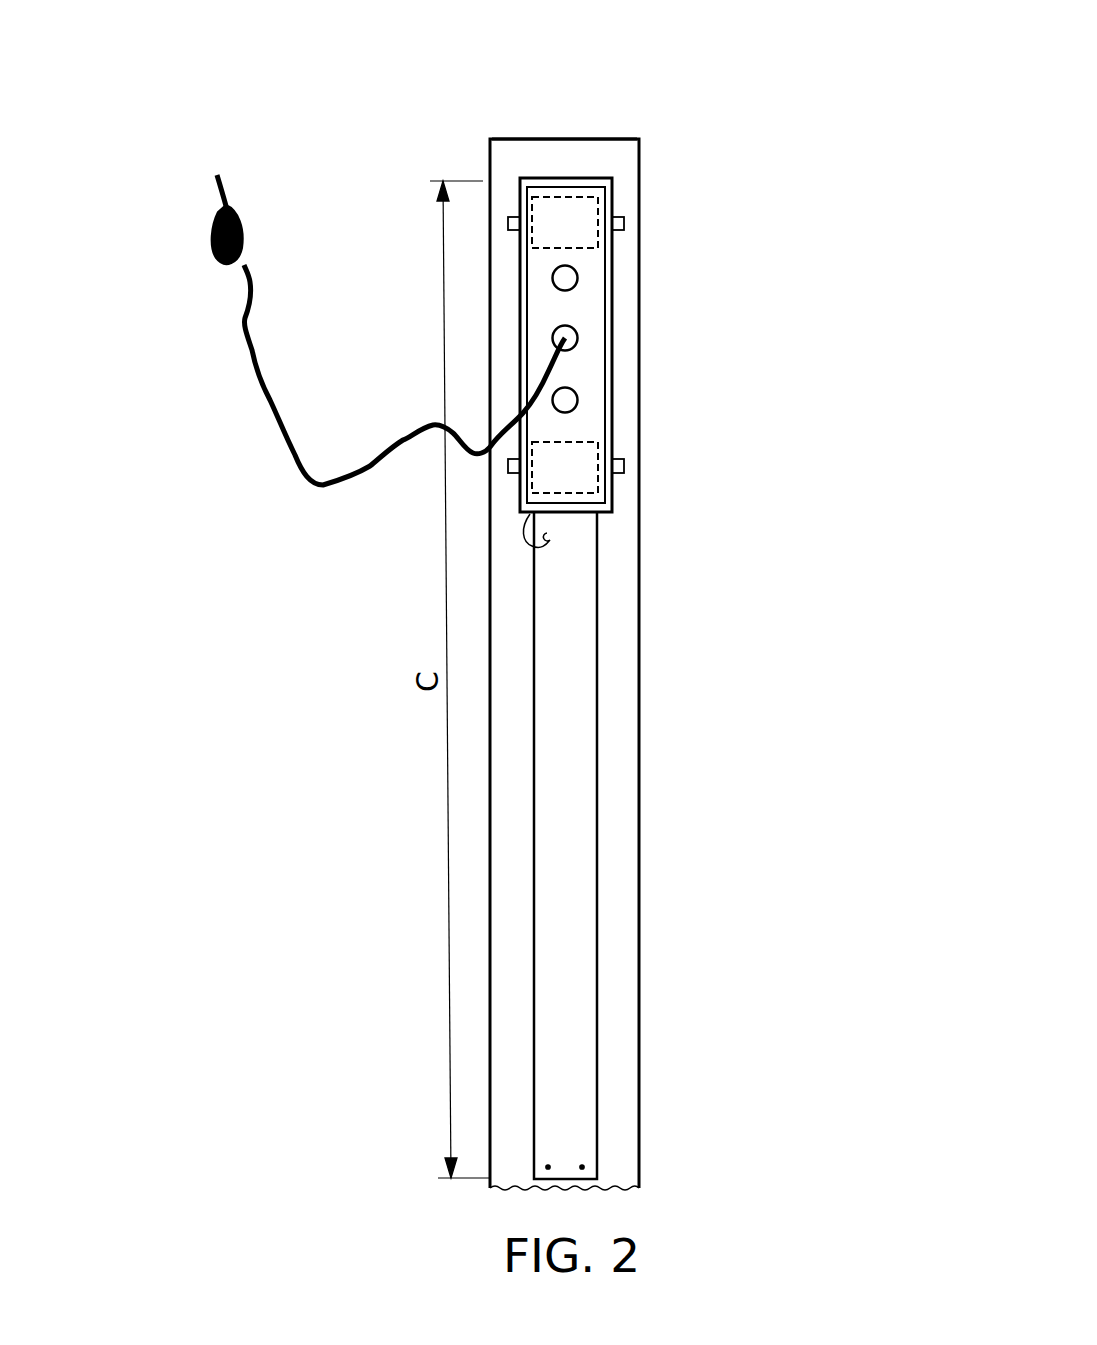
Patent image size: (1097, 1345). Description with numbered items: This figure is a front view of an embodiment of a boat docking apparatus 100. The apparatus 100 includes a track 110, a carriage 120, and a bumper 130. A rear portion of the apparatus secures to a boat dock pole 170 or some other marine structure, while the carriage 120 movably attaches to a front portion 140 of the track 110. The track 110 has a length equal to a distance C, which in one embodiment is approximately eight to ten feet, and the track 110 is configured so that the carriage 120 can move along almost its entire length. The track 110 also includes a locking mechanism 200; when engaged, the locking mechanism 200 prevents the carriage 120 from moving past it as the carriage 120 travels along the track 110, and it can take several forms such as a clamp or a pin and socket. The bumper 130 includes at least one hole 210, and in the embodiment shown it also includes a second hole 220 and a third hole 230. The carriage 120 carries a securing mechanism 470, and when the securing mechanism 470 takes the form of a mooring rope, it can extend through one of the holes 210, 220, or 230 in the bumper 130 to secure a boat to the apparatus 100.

The apparatus 100 is at (805, 132).
The track 110 is at (508, 929).
The carriage 120 is at (612, 508).
The bumper 130 is at (553, 345).
The front portion 140 is at (569, 763).
The boat dock pole 170 is at (588, 148).
The locking mechanism 200 is at (527, 538).
The hole 210 is at (578, 338).
The second hole 220 is at (580, 277).
The third hole 230 is at (569, 402).
The securing mechanism 470 is at (245, 300).